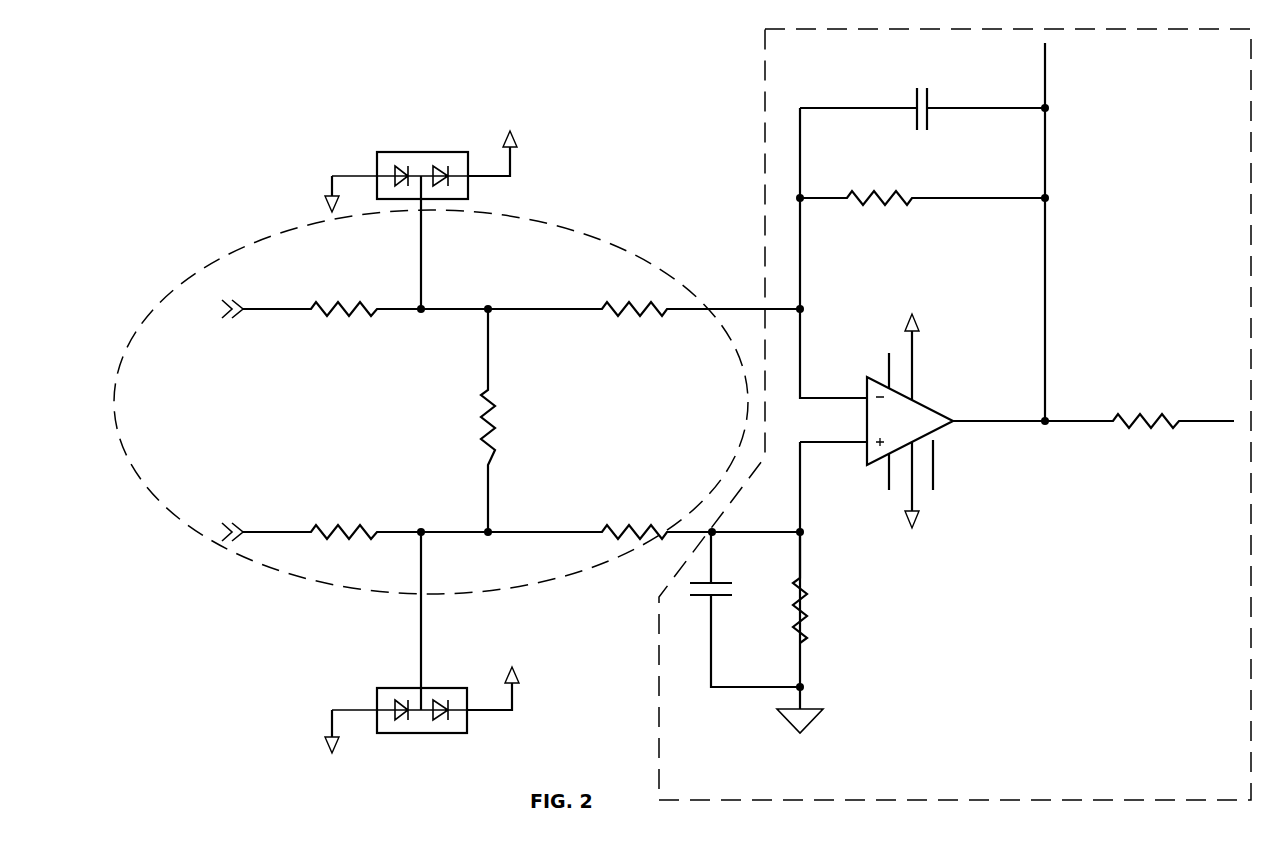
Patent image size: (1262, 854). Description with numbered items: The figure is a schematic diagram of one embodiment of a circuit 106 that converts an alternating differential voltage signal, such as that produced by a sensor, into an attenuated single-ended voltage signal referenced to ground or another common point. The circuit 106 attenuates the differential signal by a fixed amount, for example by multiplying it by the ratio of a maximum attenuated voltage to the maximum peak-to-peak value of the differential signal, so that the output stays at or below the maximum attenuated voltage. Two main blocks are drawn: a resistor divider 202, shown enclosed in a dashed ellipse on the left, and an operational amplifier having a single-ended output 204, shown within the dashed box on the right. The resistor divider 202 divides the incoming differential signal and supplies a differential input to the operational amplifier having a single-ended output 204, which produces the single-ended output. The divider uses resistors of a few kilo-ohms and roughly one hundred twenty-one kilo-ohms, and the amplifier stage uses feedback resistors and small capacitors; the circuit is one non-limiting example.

The circuit 106 is at (576, 100).
The resistor divider 202 is at (243, 245).
The operational amplifier having a single-ended output 204 is at (762, 215).